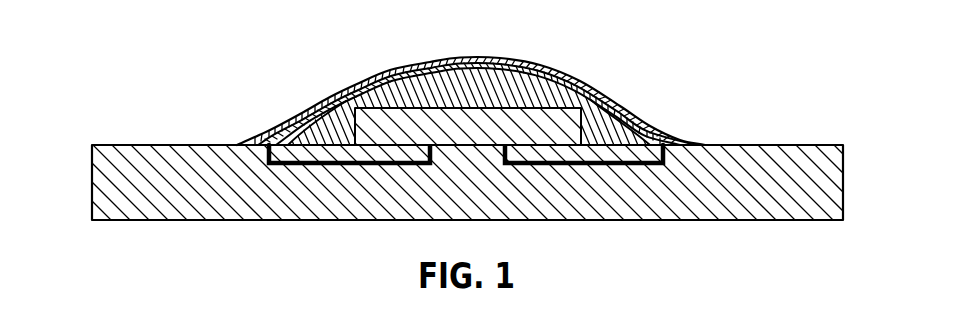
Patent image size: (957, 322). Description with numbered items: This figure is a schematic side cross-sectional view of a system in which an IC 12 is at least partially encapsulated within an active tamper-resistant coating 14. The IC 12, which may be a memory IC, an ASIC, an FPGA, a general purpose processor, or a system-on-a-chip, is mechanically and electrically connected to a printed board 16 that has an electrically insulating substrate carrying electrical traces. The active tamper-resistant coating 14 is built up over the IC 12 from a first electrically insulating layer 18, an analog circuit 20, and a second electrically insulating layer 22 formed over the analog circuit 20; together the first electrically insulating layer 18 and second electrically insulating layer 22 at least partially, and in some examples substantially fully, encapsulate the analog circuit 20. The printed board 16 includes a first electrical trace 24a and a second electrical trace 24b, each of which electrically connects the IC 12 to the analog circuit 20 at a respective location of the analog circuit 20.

The IC 12 is at (363, 127).
The active tamper-resistant coating 14 is at (469, 78).
The printed board 16 is at (92, 184).
The first electrically insulating layer 18 is at (552, 99).
The analog circuit 20 is at (498, 73).
The second electrically insulating layer 22 is at (412, 67).
The first electrical trace 24a is at (323, 164).
The second electrical trace 24b is at (620, 165).